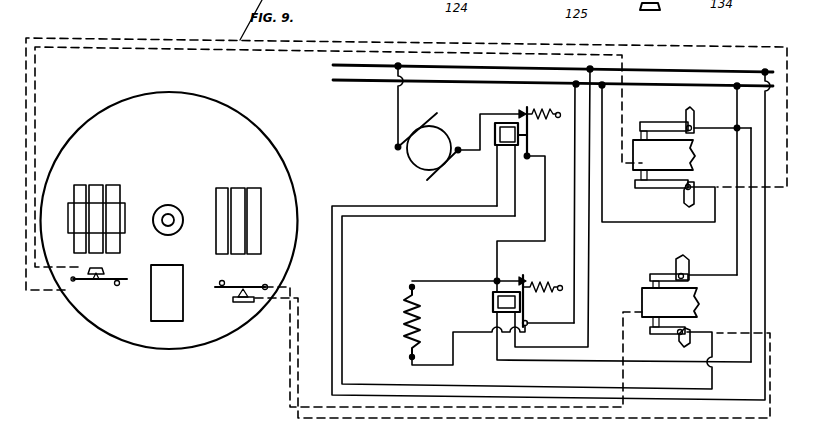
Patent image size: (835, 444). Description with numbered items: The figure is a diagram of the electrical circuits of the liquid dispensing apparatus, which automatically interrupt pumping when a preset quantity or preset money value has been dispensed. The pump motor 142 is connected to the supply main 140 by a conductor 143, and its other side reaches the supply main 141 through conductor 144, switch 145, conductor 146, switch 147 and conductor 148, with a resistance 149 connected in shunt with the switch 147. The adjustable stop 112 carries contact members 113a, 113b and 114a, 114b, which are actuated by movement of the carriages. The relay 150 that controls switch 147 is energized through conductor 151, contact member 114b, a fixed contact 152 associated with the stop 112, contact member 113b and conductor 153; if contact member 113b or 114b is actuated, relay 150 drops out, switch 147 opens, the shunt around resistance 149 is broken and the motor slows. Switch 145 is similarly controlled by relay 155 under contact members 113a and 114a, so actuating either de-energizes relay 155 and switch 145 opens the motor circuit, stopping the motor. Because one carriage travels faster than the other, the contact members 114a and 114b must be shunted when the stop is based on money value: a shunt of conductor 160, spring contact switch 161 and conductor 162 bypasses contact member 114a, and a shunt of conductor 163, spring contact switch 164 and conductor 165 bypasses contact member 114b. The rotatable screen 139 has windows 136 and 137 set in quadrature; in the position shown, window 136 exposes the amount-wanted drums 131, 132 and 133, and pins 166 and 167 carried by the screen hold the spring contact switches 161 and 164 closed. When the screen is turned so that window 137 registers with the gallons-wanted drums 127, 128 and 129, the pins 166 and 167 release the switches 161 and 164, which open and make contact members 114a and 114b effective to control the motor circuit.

The adjustable stop 112 is at (697, 141).
The contact member 113a is at (676, 265).
The contact member 113b is at (684, 116).
The contact member 114a is at (665, 338).
The contact member 114b is at (656, 189).
The drum 127 is at (220, 188).
The drum 128 is at (238, 188).
The drum 129 is at (257, 201).
The drum 131 is at (81, 187).
The drum 132 is at (96, 188).
The drum 133 is at (113, 187).
The window 136 is at (124, 205).
The window 137 is at (152, 320).
The rotatable screen 139 is at (138, 98).
The supply main 140 is at (338, 67).
The supply main 141 is at (366, 87).
The motor 142 is at (417, 162).
The conductor 143 is at (395, 118).
The conductor 144 is at (488, 112).
The switch 145 is at (533, 143).
The conductor 146 is at (546, 205).
The switch 147 is at (528, 283).
The conductor 148 is at (573, 224).
The resistance 149 is at (403, 317).
The relay 150 is at (491, 285).
The conductor 151 is at (602, 224).
The fixed contact 152 is at (685, 180).
The conductor 153 is at (554, 362).
The relay 155 is at (494, 169).
The conductor 160 is at (698, 420).
The spring contact switch 161 is at (232, 300).
The conductor 162 is at (558, 410).
The conductor 163 is at (743, 50).
The spring contact switch 164 is at (94, 283).
The conductor 165 is at (245, 52).
The pin 166 is at (224, 285).
The pin 167 is at (113, 285).